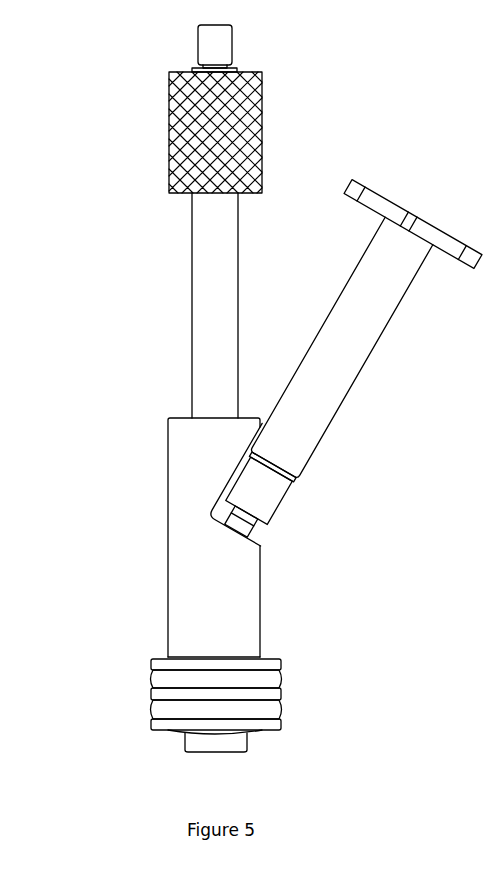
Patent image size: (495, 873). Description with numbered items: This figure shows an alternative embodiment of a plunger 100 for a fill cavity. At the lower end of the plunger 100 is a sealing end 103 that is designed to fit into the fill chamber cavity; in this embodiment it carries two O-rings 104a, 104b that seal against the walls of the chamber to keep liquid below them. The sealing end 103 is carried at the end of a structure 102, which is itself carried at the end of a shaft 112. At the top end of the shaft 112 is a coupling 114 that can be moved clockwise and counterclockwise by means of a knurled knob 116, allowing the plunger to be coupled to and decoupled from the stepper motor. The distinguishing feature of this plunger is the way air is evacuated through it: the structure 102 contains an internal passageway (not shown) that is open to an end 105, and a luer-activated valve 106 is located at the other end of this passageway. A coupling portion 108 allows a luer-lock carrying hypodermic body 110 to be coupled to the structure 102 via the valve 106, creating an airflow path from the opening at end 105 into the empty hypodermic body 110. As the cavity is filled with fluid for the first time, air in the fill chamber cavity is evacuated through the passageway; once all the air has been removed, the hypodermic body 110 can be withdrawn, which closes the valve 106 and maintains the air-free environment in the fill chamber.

The plunger 100 is at (140, 358).
The structure 102 is at (170, 588).
The sealing end 103 is at (204, 693).
The O-ring 104a is at (148, 680).
The O-ring 104b is at (148, 708).
The end 105 is at (220, 750).
The luer-activated valve 106 is at (248, 523).
The coupling portion 108 is at (263, 497).
The hypodermic body 110 is at (370, 317).
The shaft 112 is at (238, 270).
The coupling 114 is at (232, 42).
The knurled knob 116 is at (262, 108).